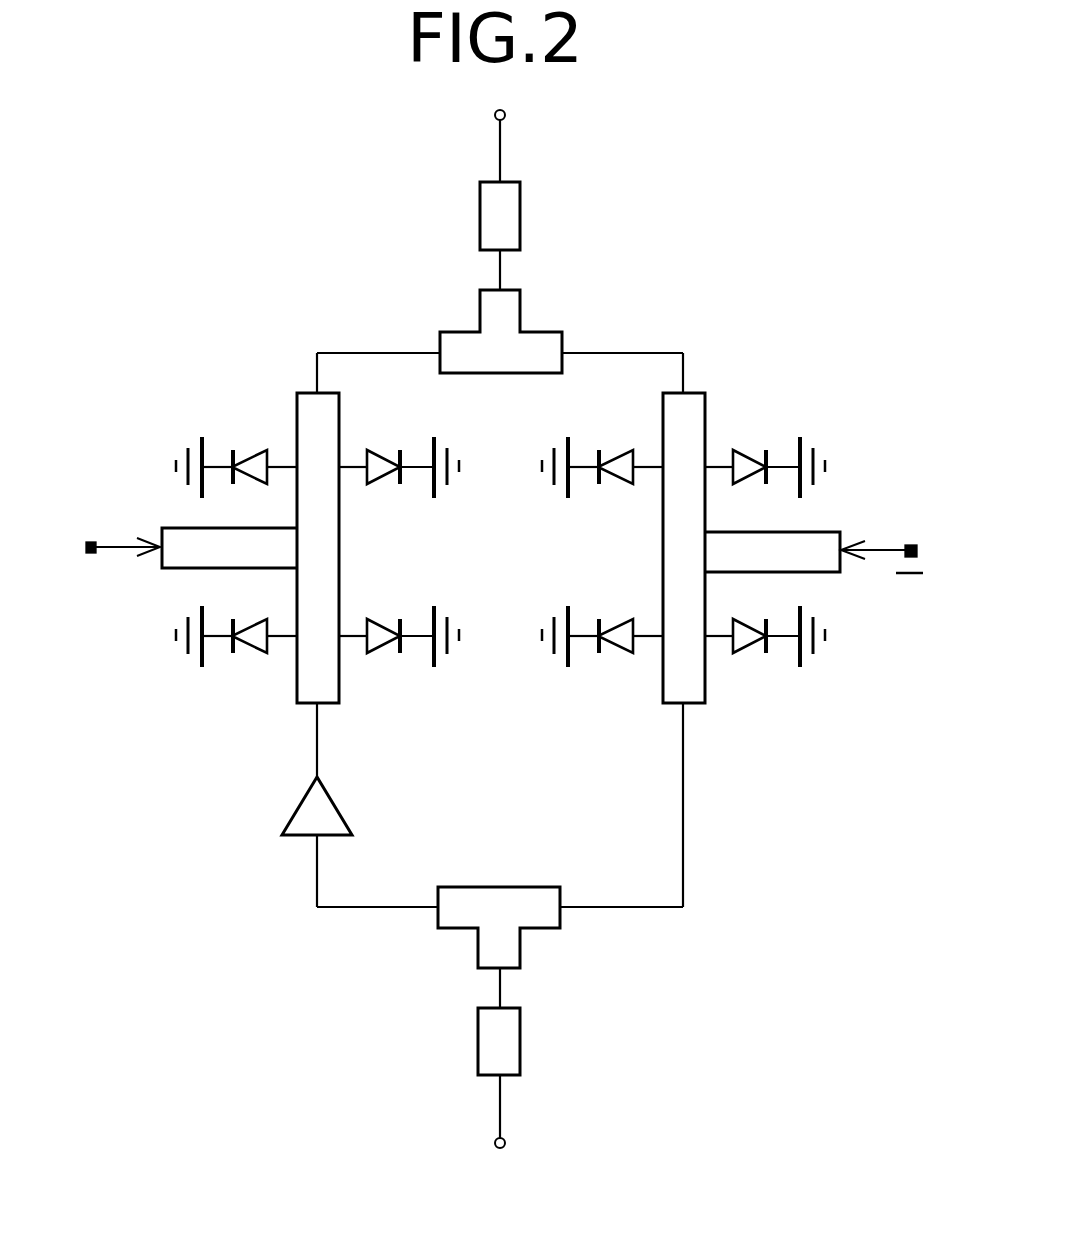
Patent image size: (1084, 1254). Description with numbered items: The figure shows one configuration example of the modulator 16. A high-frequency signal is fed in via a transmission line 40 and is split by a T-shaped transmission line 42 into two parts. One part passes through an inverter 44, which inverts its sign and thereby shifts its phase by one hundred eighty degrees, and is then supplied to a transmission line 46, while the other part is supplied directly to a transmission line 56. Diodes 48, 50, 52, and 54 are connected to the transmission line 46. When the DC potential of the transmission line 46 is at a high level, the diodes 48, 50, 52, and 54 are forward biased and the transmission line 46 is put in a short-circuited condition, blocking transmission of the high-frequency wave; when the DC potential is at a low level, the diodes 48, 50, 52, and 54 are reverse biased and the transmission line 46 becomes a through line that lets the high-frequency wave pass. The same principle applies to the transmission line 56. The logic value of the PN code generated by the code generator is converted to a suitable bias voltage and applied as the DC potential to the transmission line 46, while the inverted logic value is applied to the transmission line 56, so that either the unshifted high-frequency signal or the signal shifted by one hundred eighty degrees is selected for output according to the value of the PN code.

The modulator 16 is at (876, 1029).
The transmission line 40 is at (513, 1038).
The T-shaped transmission line 42 is at (543, 893).
The inverter 44 is at (300, 812).
The transmission line 46 is at (300, 410).
The diode 48 is at (257, 452).
The diode 50 is at (377, 460).
The diode 52 is at (253, 652).
The diode 54 is at (377, 627).
The transmission line 56 is at (707, 412).